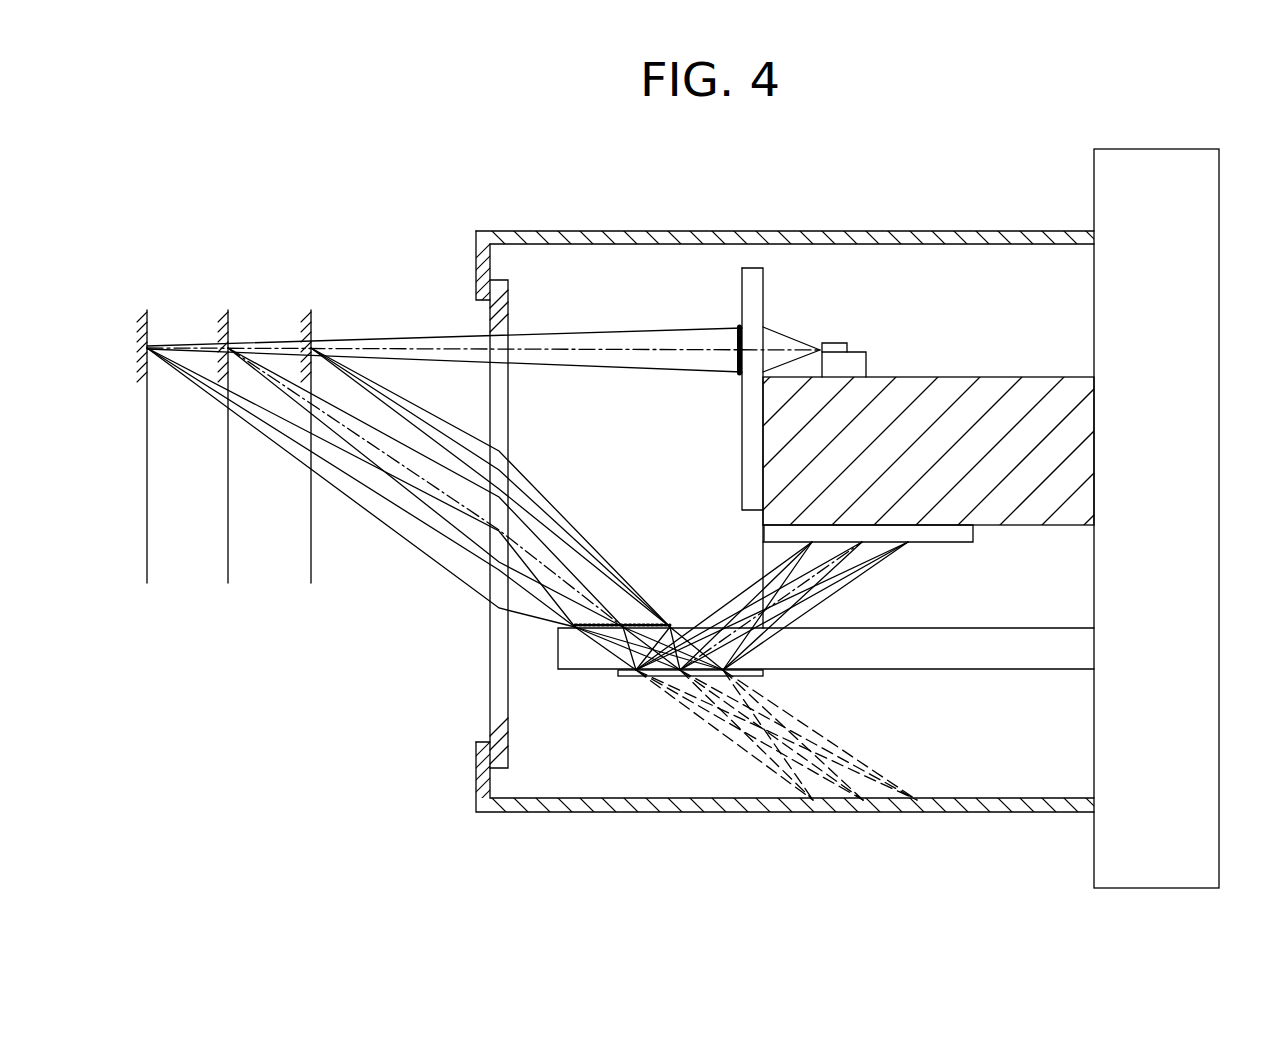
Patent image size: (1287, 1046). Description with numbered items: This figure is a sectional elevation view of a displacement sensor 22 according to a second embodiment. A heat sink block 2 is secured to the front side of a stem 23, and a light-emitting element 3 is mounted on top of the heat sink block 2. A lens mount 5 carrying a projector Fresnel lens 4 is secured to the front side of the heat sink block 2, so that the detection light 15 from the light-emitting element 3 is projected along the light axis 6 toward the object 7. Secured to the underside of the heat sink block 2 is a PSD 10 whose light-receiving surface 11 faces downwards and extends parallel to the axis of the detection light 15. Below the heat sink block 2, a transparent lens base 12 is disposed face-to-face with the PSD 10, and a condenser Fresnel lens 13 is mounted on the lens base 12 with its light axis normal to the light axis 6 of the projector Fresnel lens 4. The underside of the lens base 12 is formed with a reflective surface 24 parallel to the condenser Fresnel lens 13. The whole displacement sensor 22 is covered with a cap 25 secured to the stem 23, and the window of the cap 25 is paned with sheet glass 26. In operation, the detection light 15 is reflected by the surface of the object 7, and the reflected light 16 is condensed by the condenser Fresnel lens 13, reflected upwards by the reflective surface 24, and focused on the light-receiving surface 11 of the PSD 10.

The heat sink block 2 is at (940, 383).
The light-emitting element 3 is at (837, 347).
The projector Fresnel lens 4 is at (737, 335).
The lens mount 5 is at (747, 300).
The light axis 6 is at (610, 348).
The object 7 is at (311, 533).
The PSD 10 is at (765, 535).
The light-receiving surface 11 is at (928, 543).
The lens base 12 is at (916, 655).
The condenser Fresnel lens 13 is at (643, 623).
The detection light 15 is at (430, 334).
The reflected light 16 is at (423, 460).
The displacement sensor 22 is at (912, 217).
The stem 23 is at (1199, 527).
The reflective surface 24 is at (662, 678).
The cap 25 is at (527, 230).
The sheet glass 26 is at (495, 693).